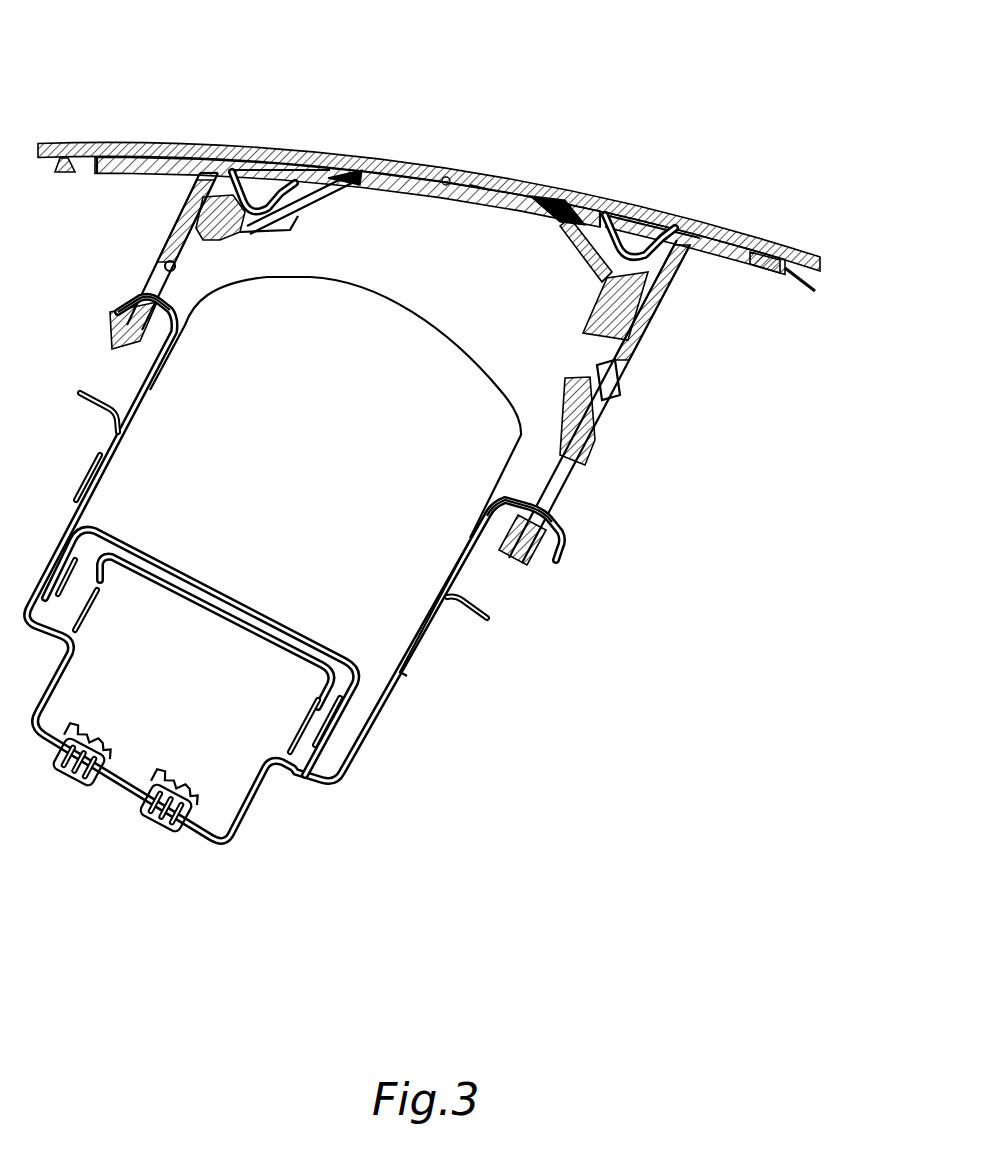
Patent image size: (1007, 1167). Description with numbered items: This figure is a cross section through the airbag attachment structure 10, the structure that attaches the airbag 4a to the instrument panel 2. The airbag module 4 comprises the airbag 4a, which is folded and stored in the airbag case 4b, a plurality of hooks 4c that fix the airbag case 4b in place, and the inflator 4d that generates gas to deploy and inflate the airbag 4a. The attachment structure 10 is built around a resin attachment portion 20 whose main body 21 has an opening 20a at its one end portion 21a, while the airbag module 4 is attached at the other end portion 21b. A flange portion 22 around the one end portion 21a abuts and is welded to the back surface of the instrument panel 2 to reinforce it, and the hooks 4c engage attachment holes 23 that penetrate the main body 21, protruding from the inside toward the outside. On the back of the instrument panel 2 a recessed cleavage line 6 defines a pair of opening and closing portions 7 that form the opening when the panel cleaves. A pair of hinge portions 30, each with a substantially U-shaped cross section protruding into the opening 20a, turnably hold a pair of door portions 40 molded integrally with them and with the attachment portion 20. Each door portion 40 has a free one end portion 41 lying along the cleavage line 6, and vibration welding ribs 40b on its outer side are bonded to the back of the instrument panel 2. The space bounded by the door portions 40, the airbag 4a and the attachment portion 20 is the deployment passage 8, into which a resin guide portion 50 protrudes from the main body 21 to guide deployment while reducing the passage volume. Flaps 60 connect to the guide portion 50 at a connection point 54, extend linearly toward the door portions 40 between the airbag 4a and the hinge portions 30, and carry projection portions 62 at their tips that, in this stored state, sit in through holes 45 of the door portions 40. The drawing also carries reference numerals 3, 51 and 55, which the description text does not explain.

The instrument panel 2 is at (737, 210).
The roof structure 3 is at (423, 441).
The airbag module 4 is at (330, 566).
The airbag 4a is at (313, 484).
The airbag case 4b is at (383, 717).
The hooks 4c is at (130, 300).
The inflator 4d is at (120, 792).
The cleavage line 6 is at (678, 197).
The opening and closing portions 7 is at (404, 172).
The deployment passage 8 is at (440, 315).
The airbag attachment structure 10 is at (394, 420).
The attachment portion 20 is at (160, 184).
The opening 20a is at (518, 225).
The main body 21 is at (166, 170).
The one end portion 21a is at (217, 163).
The other end portion 21b is at (517, 568).
The flange portion 22 is at (127, 150).
The attachment holes 23 is at (180, 272).
The hinge portions 30 is at (276, 163).
The door portions 40 is at (445, 196).
The vibration welding ribs 40b is at (478, 180).
The one end portion 41 is at (430, 176).
The through holes 45 is at (343, 167).
The guide portion 50 is at (617, 439).
The bracket plate 51 is at (560, 490).
The connection point 54 is at (195, 167).
The bracket 55 is at (394, 282).
The flaps 60 is at (429, 246).
The projection portions 62 is at (350, 187).